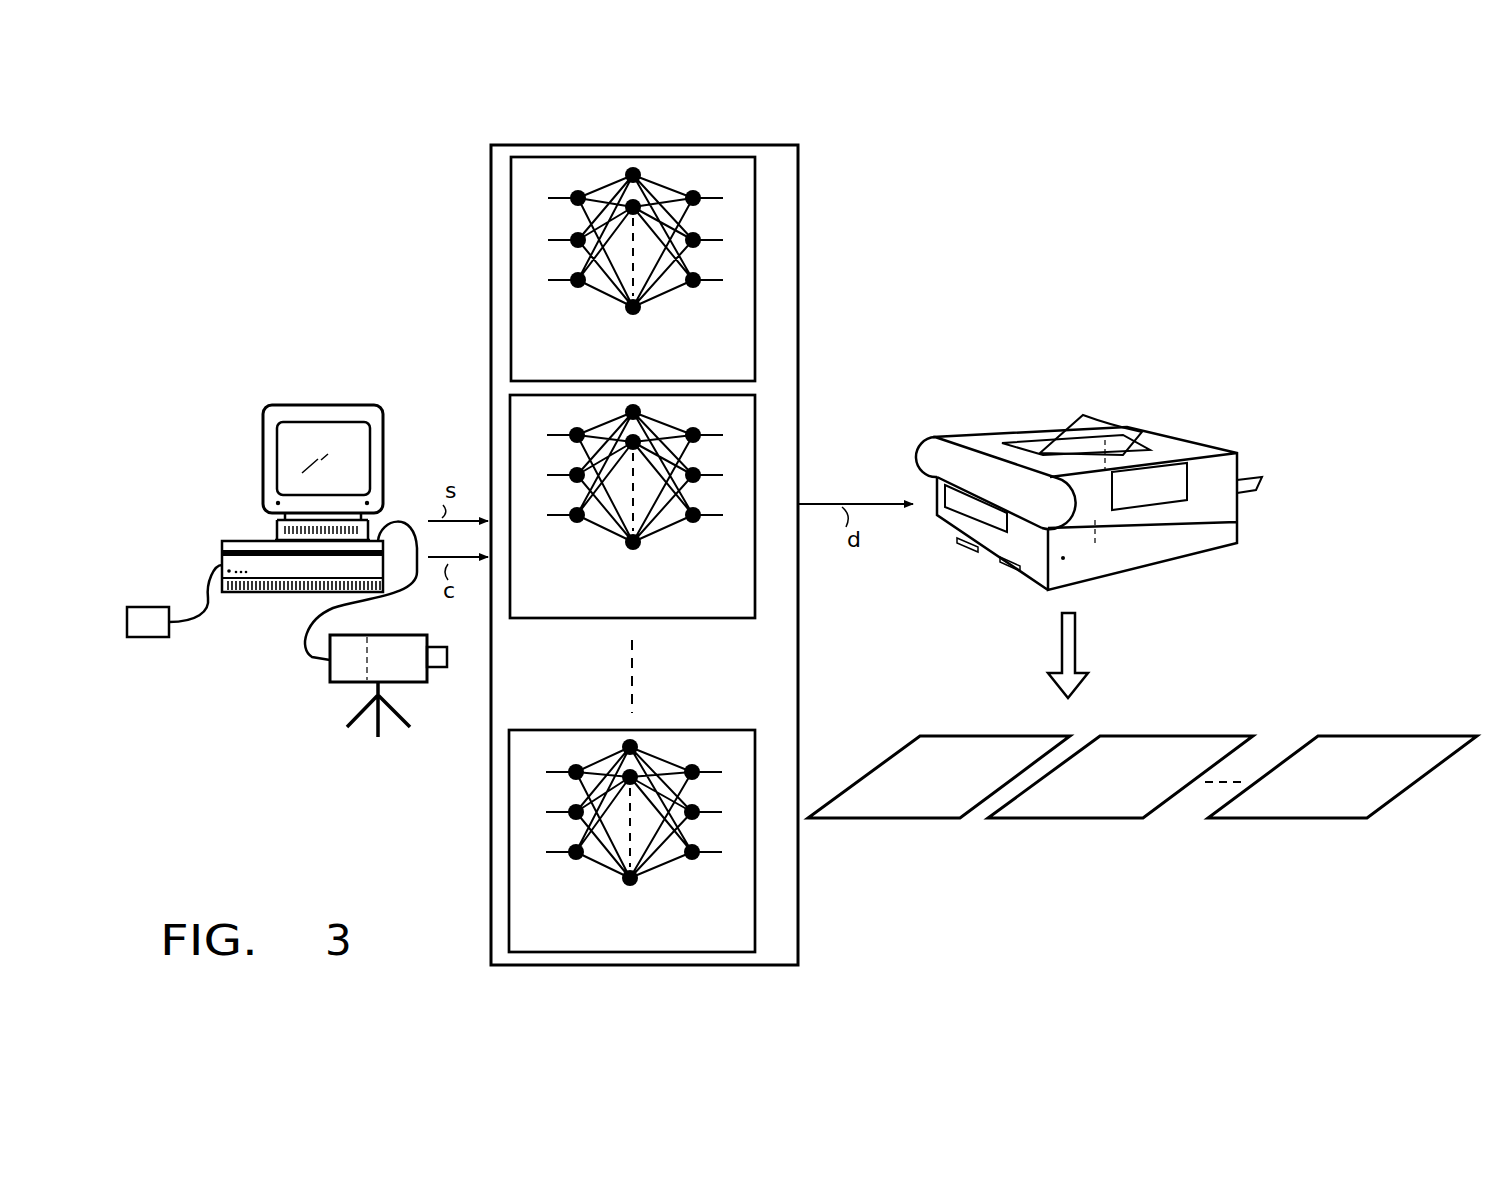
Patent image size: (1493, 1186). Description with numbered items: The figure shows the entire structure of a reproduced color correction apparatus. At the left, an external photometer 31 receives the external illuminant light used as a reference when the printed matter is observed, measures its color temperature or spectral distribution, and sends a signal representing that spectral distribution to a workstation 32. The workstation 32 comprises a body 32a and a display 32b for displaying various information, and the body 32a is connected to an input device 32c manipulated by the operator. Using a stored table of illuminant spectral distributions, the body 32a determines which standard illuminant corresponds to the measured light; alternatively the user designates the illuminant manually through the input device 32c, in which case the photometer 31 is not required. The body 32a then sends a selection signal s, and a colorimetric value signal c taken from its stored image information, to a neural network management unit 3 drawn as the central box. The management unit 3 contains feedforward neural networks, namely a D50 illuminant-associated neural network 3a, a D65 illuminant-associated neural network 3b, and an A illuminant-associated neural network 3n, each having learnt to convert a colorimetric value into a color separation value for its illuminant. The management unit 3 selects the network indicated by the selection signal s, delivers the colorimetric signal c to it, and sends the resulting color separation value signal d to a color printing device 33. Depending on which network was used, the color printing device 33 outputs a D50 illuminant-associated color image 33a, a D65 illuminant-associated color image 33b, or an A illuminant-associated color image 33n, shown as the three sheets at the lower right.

The neural network management unit 3 is at (798, 303).
The D50 illuminant-associated neural network 3a is at (783, 208).
The D65 illuminant-associated neural network 3b is at (783, 436).
The A illuminant-associated neural network 3n is at (690, 730).
The external photometer 31 is at (414, 683).
The workstation 32 is at (322, 392).
The body 32a is at (226, 540).
The display 32b is at (263, 448).
The input device 32c is at (150, 640).
The color printing device 33 is at (1165, 435).
The D50 illuminant-associated color image 33a is at (952, 735).
The D65 illuminant-associated color image 33b is at (1192, 736).
The A illuminant-associated color image 33n is at (1318, 818).